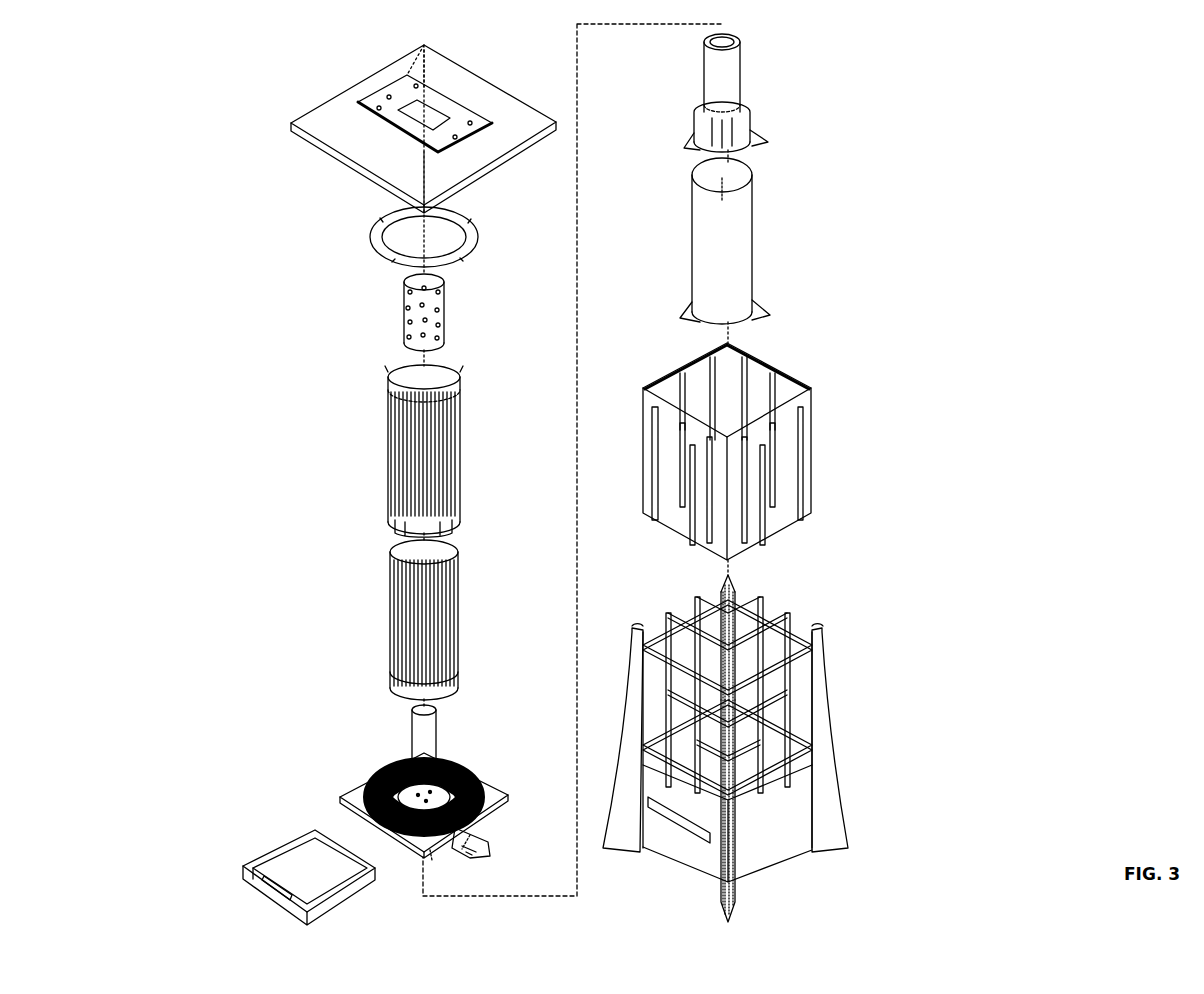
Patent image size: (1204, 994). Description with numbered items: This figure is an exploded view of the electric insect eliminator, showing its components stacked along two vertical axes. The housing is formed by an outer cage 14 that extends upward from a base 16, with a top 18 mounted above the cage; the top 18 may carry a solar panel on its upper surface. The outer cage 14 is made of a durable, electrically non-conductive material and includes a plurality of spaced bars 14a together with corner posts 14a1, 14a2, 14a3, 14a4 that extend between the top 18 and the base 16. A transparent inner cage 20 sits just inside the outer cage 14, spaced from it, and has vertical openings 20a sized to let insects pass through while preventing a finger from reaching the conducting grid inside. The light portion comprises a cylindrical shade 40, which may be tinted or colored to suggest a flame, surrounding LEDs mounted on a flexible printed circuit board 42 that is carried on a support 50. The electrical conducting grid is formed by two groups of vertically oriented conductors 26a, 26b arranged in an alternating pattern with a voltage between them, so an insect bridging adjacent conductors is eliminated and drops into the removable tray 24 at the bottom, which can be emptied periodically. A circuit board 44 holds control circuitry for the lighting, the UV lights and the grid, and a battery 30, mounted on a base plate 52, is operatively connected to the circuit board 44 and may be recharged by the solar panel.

The top 18 is at (330, 118).
The circuit board 44 is at (370, 230).
The flexible printed circuit board 42 is at (400, 306).
The second group of conductors 26b is at (388, 438).
The first group of conductors 26a is at (390, 605).
The battery 30 is at (425, 752).
The base plate 52 is at (340, 795).
The removable tray 24 is at (293, 840).
The support 50 is at (728, 84).
The cylindrical shade 40 is at (752, 246).
The transparent inner cage 20 is at (808, 451).
The openings 20a is at (752, 473).
The outer cage 14 is at (799, 742).
The bars 14a is at (822, 690).
The corner post 14a1 is at (825, 727).
The corner post 14a2 is at (738, 585).
The corner post 14a3 is at (633, 628).
The corner post 14a4 is at (735, 880).
The base 16 is at (785, 822).